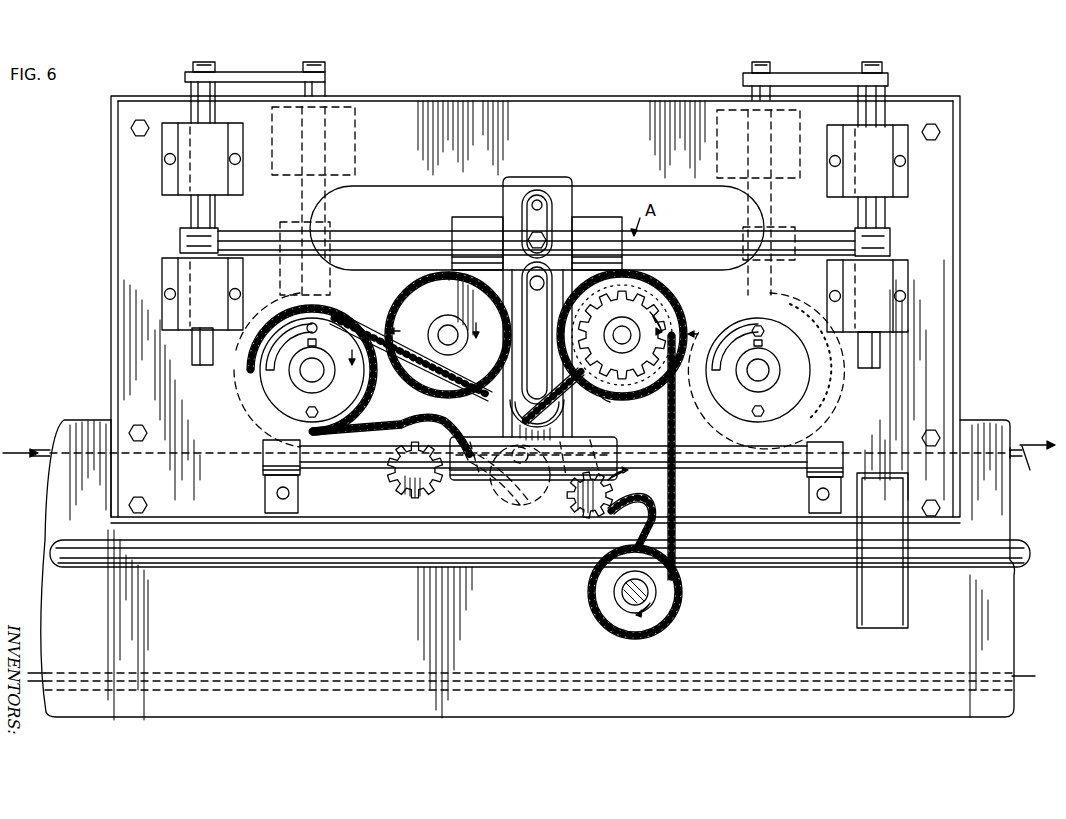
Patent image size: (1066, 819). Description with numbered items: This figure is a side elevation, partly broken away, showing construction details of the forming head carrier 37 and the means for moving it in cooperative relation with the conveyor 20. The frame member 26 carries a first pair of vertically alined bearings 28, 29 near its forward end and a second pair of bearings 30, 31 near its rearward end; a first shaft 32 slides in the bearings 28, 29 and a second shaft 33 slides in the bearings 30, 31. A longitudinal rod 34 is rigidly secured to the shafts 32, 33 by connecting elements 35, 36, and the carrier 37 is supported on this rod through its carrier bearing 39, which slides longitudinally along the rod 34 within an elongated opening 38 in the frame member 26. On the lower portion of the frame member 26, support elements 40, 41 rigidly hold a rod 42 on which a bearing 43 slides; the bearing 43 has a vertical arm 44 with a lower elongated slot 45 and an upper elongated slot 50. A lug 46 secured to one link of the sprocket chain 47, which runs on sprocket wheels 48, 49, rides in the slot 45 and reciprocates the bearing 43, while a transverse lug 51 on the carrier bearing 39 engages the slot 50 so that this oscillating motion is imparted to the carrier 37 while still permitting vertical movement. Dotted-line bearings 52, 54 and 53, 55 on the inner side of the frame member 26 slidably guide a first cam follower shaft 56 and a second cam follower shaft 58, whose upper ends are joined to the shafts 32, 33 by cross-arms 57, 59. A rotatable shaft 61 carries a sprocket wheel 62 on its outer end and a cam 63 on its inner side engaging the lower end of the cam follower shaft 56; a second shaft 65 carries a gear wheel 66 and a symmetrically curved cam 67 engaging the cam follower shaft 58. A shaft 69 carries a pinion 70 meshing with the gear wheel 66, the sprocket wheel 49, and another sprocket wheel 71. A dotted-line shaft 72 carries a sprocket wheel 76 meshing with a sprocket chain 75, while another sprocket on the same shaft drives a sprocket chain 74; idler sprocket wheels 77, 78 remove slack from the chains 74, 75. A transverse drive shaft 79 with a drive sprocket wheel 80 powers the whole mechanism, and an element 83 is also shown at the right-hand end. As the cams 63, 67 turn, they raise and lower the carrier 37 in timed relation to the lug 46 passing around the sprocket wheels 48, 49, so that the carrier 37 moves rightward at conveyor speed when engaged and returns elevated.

The conveyor 20 is at (50, 452).
The frame member 26 is at (535, 309).
The bearing 28 is at (244, 134).
The bearing 29 is at (244, 282).
The bearing 30 is at (910, 162).
The bearing 31 is at (908, 282).
The first shaft 32 is at (191, 356).
The second shaft 33 is at (880, 362).
The rod 34 is at (690, 236).
The connecting element 35 is at (190, 232).
The connecting element 36 is at (891, 238).
The carrier 37 is at (610, 216).
The elongated opening 38 is at (410, 186).
The carrier bearing 39 is at (460, 216).
The support element 40 is at (266, 483).
The support element 41 is at (809, 495).
The rod 42 is at (338, 470).
The bearing 43 is at (470, 481).
The arm 44 is at (558, 182).
The elongated slot 45 is at (537, 333).
The lug 46 is at (535, 294).
The sprocket chain 47 is at (596, 392).
The sprocket wheel 48 is at (448, 335).
The sprocket wheel 49 is at (668, 300).
The elongated slot 50 is at (536, 188).
The lug 51 is at (530, 232).
The bearing 52 is at (345, 110).
The bearing 53 is at (726, 110).
The bearing 54 is at (305, 245).
The bearing 55 is at (777, 226).
The first cam follower shaft 56 is at (328, 92).
The cross-arm 57 is at (265, 74).
The second cam follower shaft 58 is at (748, 92).
The cross-arm 59 is at (822, 74).
The shaft 61 is at (318, 372).
The sprocket wheel 62 is at (258, 410).
The cam 63 is at (238, 384).
The shaft 65 is at (770, 369).
The gear wheel 66 is at (836, 385).
The cam 67 is at (838, 405).
The shaft 69 is at (612, 334).
The pinion 70 is at (680, 318).
The sprocket wheel 71 is at (621, 335).
The shaft 72 is at (518, 488).
The sprocket chain 74 is at (530, 374).
The sprocket chain 75 is at (384, 328).
The sprocket wheel 76 is at (540, 543).
The idler sprocket wheel 77 is at (608, 535).
The idler sprocket wheel 78 is at (425, 492).
The drive shaft 79 is at (620, 598).
The drive sprocket wheel 80 is at (680, 600).
The shaft end 83 is at (1022, 458).